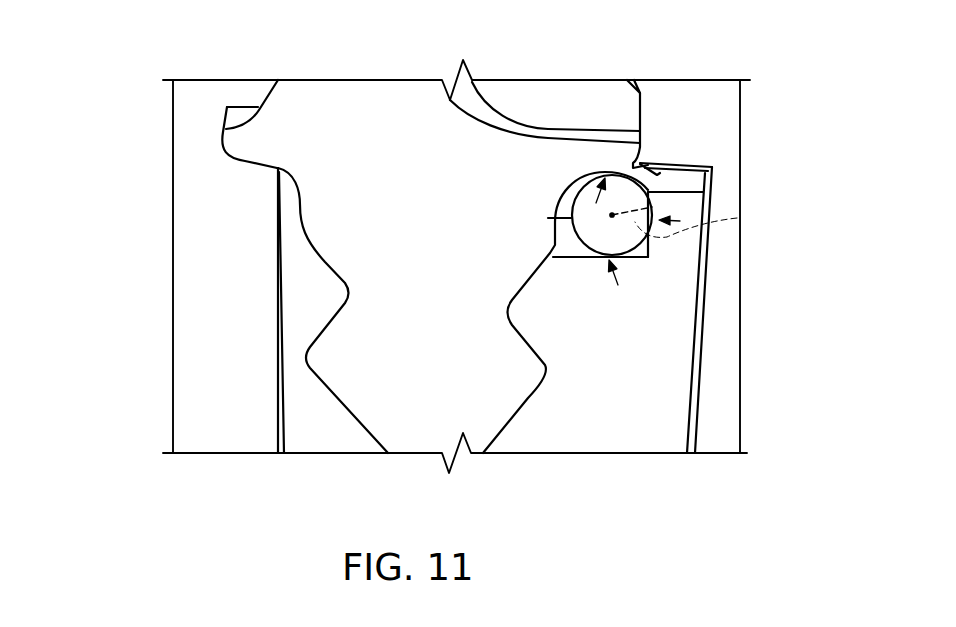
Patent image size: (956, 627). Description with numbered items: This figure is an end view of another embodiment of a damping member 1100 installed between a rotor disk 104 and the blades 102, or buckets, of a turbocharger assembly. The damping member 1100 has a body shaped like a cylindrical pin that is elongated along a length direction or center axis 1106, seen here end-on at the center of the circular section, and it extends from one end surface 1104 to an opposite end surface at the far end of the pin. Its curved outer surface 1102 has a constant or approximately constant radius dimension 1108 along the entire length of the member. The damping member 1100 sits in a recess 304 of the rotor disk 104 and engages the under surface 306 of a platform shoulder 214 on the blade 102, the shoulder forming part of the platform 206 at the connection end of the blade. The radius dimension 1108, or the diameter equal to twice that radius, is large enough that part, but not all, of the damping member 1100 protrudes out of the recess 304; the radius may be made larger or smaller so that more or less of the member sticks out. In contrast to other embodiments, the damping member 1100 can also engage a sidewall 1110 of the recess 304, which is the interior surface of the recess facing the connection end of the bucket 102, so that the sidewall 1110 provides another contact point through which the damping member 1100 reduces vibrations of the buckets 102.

The blade 102 is at (347, 118).
The rotor disk 104 is at (660, 398).
The platform 206 is at (138, 83).
The platform shoulder 214 is at (603, 152).
The recess 304 is at (653, 328).
The under surface 306 is at (596, 204).
The damping member 1100 is at (613, 282).
The curved outer surface 1102 is at (632, 187).
The end surface 1104 is at (602, 238).
The center axis 1106 is at (613, 213).
The radius dimension 1108 is at (737, 218).
The sidewall 1110 is at (680, 221).